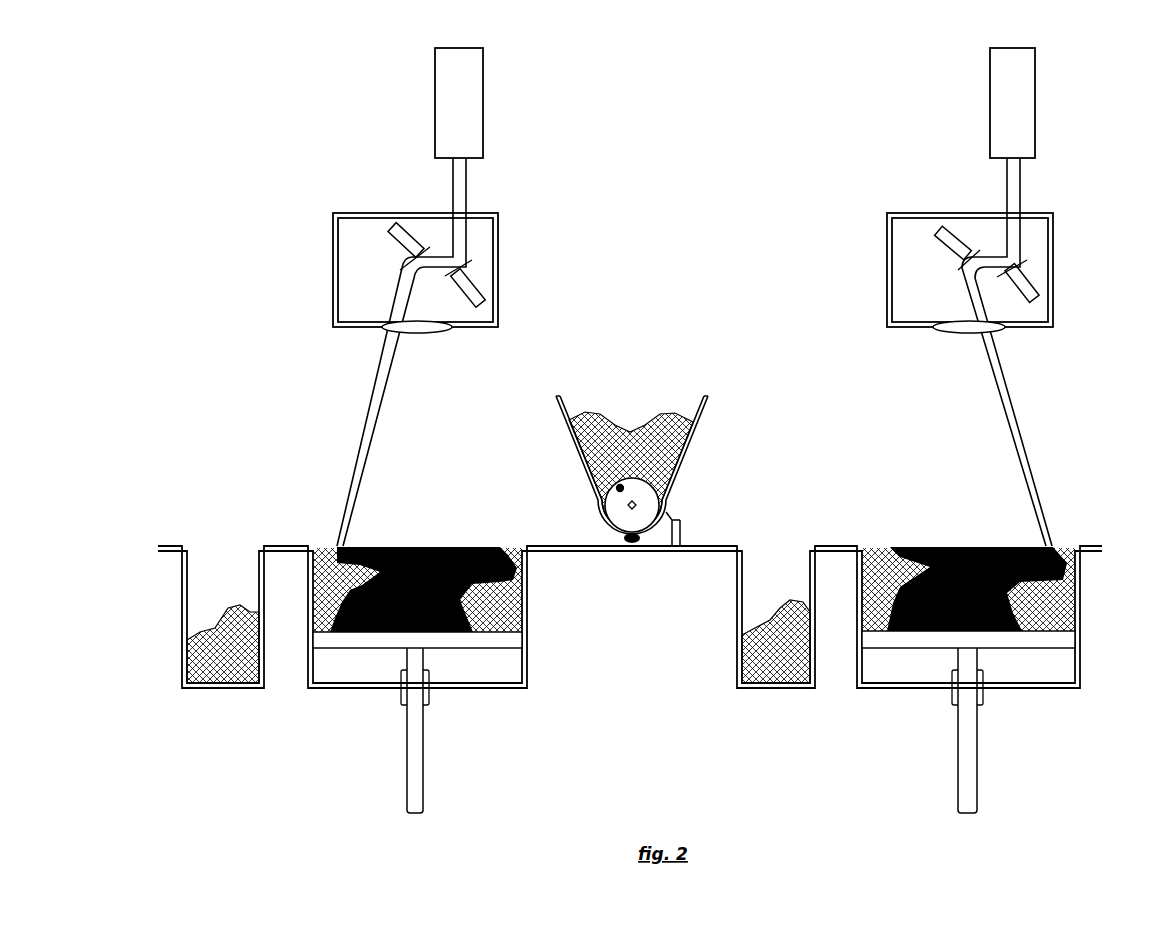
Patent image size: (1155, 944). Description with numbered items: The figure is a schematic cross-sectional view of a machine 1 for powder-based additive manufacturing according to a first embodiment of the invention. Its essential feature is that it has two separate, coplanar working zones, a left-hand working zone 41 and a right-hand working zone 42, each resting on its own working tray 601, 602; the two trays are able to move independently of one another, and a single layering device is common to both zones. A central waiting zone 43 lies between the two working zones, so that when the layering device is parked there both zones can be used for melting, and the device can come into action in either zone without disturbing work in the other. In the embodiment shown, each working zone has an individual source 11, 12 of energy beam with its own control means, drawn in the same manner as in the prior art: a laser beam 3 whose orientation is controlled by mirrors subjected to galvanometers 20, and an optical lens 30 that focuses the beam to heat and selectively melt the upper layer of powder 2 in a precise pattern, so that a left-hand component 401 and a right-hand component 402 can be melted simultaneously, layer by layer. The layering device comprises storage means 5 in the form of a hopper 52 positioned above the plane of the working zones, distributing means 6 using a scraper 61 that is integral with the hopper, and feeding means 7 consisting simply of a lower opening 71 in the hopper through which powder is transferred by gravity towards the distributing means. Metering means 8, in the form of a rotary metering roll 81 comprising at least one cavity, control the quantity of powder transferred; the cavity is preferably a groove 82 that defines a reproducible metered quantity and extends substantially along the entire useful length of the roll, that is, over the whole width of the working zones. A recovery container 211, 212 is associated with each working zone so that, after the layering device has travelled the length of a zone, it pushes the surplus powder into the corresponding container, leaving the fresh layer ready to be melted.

The machine 1 is at (258, 326).
The individual source 11 is at (448, 91).
The individual source 12 is at (998, 105).
The powder 2 is at (631, 547).
The galvanometers 20 is at (402, 237).
The laser beam 3 is at (373, 415).
The optical lens 30 is at (423, 327).
The left-hand working zone 41 is at (417, 630).
The right-hand working zone 42 is at (968, 619).
The central waiting zone 43 is at (632, 570).
The component 401 is at (423, 589).
The right-hand component 402 is at (977, 589).
The working tray 601 is at (452, 638).
The working tray 602 is at (992, 635).
The recovery container 211 is at (225, 580).
The recovery container 212 is at (773, 570).
The storage means 5 is at (631, 423).
The hopper 52 is at (560, 397).
The distributing means 6 is at (699, 502).
The scraper 61 is at (683, 535).
The feeding means 7 is at (575, 476).
The lower opening 71 is at (608, 543).
The metering means 8 is at (585, 507).
The rotary metering roll 81 is at (598, 424).
The groove 82 is at (668, 417).